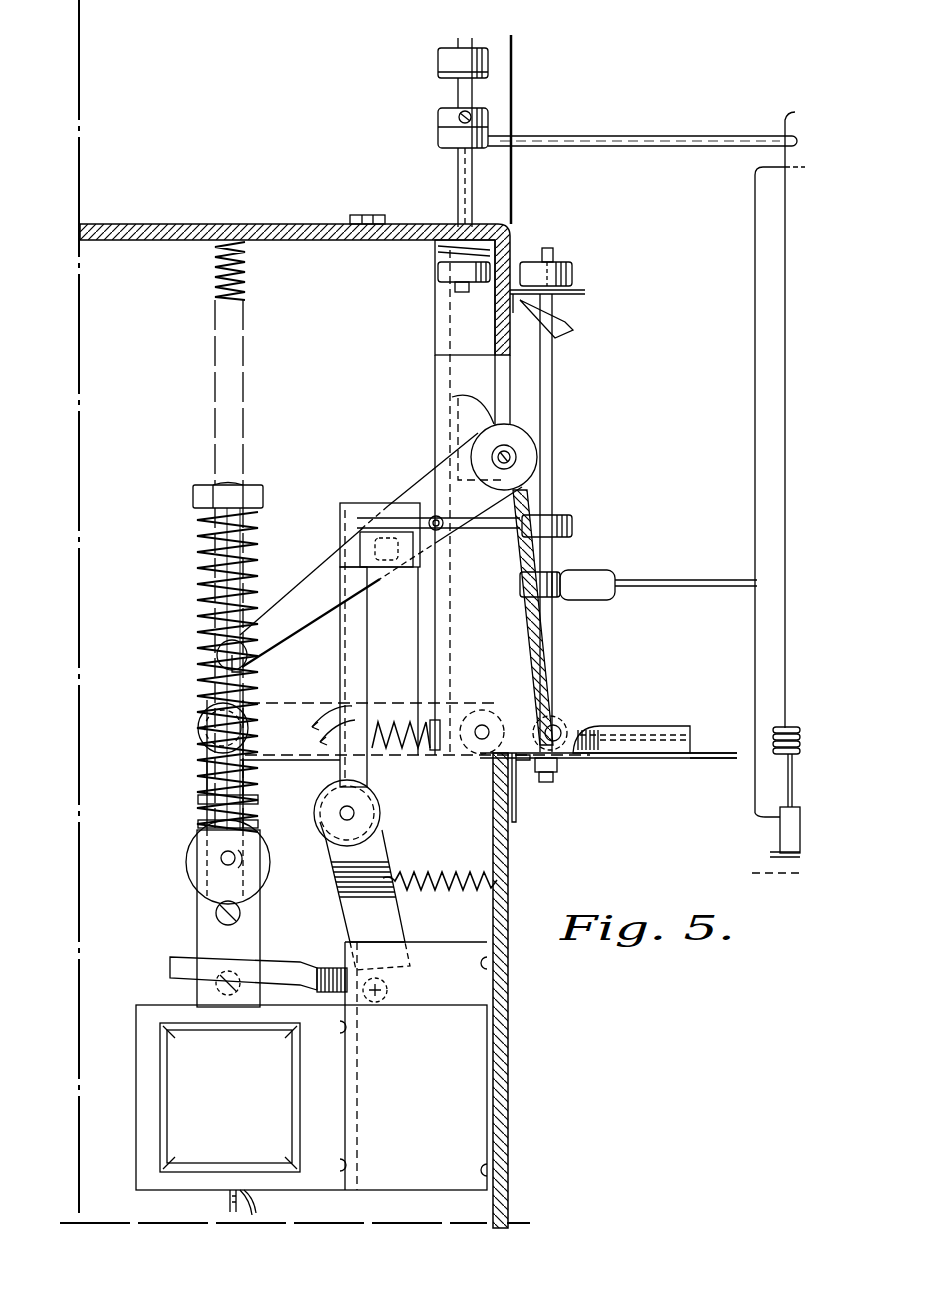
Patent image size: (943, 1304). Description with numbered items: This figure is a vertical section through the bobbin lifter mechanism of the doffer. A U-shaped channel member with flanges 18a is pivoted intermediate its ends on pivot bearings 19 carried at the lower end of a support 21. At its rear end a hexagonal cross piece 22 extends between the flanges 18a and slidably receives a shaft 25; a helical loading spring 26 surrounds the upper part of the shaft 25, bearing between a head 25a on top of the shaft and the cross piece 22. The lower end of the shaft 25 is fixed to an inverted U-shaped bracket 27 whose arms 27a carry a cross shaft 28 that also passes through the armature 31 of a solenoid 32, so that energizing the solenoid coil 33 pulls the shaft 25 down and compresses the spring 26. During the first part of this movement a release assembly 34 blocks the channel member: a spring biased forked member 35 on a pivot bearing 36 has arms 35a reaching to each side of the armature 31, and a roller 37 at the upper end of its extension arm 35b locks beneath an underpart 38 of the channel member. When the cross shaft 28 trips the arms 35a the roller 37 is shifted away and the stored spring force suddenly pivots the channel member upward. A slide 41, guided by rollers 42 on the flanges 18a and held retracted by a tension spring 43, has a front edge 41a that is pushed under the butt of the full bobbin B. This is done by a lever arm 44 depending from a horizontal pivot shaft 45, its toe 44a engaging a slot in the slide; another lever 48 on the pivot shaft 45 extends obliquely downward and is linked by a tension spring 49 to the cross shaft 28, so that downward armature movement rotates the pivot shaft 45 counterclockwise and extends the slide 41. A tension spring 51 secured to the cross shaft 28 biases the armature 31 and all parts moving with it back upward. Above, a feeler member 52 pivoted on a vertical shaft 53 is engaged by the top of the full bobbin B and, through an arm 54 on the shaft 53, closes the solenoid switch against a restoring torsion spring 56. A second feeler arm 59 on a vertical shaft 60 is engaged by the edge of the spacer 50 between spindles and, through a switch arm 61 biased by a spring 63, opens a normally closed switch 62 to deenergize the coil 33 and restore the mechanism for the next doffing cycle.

The channel flanges 18a is at (313, 697).
The pivot bearings 19 is at (483, 726).
The support 21 is at (452, 483).
The cross piece 22 is at (198, 727).
The shaft 25 is at (205, 582).
The head 25a is at (200, 498).
The helical loading spring 26 is at (212, 621).
The inverted U-shaped bracket 27 is at (198, 820).
The bracket arms 27a is at (187, 855).
The cross shaft 28 is at (222, 862).
The solenoid armature 31 is at (205, 938).
The solenoid 32 is at (126, 1110).
The solenoid coil 33 is at (243, 1103).
The release assembly 34 is at (313, 929).
The spring biased forked member 35 is at (313, 962).
The fork arms 35a is at (170, 973).
The extension arm 35b is at (383, 915).
The pivot bearing 36 is at (388, 995).
The roller 37 is at (318, 808).
The underpart 38 is at (380, 796).
The slide 41 is at (643, 760).
The front edge 41a is at (737, 757).
The rollers 42 is at (560, 722).
The tension spring 43 is at (405, 718).
The lever arm 44 is at (535, 658).
The toe 44a is at (517, 780).
The pivot shaft 45 is at (537, 457).
The lever 48 is at (314, 570).
The tension spring 49 is at (207, 773).
The spacer 50 is at (765, 222).
The tension spring 51 is at (225, 404).
The feeler member 52 is at (606, 140).
The shaft 53 is at (458, 172).
The arm 54 is at (456, 117).
The restoring torsion spring 56 is at (452, 249).
The feeler arm 59 is at (635, 590).
The shaft 60 is at (552, 556).
The switch arm 61 is at (517, 512).
The switch 62 is at (383, 530).
The spring 63 is at (432, 516).
The full bobbin B is at (793, 405).